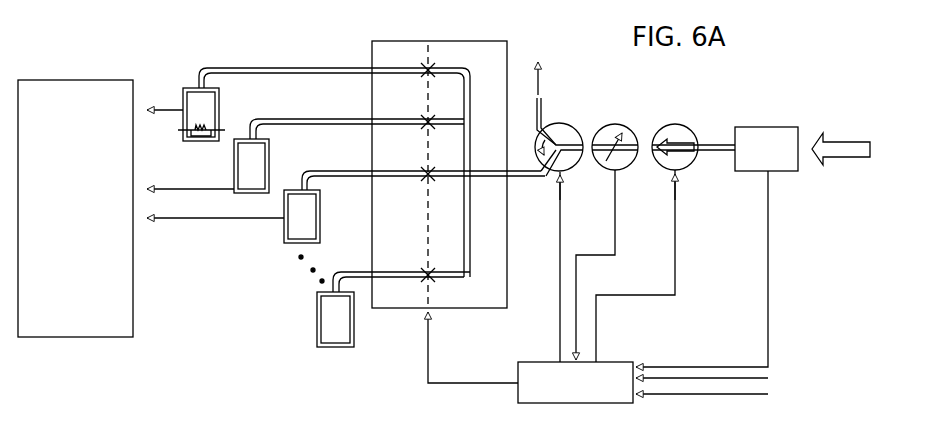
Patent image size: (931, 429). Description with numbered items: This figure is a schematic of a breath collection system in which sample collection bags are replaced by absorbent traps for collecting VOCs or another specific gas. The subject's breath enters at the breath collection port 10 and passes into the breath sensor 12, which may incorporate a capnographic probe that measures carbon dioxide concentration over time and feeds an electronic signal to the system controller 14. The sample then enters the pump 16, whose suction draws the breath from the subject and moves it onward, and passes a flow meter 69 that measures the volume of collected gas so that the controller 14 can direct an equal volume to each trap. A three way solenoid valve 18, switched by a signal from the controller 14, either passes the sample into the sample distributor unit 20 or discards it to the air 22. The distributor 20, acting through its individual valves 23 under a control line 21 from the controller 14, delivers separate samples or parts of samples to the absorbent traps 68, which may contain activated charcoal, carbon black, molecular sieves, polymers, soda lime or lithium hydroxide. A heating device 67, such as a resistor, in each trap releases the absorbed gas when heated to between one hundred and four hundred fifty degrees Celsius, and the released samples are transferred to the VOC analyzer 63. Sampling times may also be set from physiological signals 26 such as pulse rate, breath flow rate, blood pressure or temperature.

The breath collection port 10 is at (858, 139).
The breath sensor 12 is at (775, 127).
The system controller 14 is at (616, 362).
The pump 16 is at (692, 128).
The three way solenoid valve 18 is at (569, 125).
The sample distributor unit 20 is at (440, 41).
The valve control line 21 is at (462, 382).
The air 22 is at (545, 77).
The valve 23 is at (436, 68).
The physiological signals 26 is at (760, 390).
The VOC analyzer 63 is at (90, 209).
The heater 67 is at (194, 145).
The sample containers 68 is at (361, 207).
The flow meter 69 is at (624, 124).